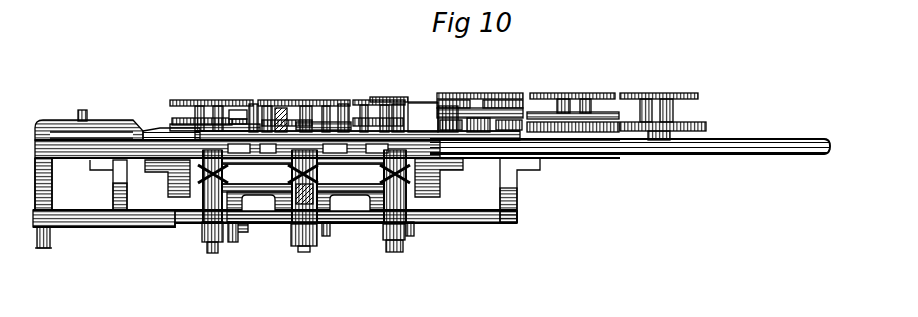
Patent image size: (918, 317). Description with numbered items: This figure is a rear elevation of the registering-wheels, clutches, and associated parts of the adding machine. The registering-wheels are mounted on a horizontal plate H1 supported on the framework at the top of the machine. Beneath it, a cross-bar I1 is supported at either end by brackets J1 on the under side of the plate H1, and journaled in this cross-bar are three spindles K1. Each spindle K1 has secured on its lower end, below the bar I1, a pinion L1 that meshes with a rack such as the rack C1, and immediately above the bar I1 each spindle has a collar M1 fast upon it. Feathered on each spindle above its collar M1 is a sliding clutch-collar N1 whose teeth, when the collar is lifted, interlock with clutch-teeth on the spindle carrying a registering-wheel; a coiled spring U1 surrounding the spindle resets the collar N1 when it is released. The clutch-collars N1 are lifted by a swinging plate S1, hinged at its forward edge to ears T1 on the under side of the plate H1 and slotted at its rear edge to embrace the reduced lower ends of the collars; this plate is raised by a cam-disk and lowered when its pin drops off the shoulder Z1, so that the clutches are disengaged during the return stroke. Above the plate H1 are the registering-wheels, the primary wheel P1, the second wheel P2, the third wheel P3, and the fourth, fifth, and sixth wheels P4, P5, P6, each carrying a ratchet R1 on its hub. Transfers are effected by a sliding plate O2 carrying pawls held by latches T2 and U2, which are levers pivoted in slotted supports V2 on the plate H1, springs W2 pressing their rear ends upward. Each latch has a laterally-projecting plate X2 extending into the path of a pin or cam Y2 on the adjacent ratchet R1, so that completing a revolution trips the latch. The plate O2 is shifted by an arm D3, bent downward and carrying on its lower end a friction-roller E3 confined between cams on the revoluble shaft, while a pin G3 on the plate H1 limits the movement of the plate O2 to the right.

The arm D3 is at (50, 122).
The pin G3 is at (97, 97).
The sliding plate O2 is at (104, 135).
The coiled spring U1 is at (200, 160).
The pin or cam Y2 is at (210, 110).
The laterally-projecting plate X2 is at (238, 115).
The primary registering-wheel P1 is at (251, 103).
The slotted supports V2 is at (262, 108).
The latch T2 is at (276, 108).
The second registering-wheel P2 is at (329, 102).
The latch U2 is at (343, 102).
The third registering-wheel P3 is at (416, 100).
The ratchet R1 is at (423, 113).
The fourth registering-wheel P4 is at (507, 95).
The fifth registering-wheel P5 is at (598, 94).
The sixth registering-wheel P6 is at (662, 96).
The horizontal plate H1 is at (630, 147).
The springs W2 is at (287, 149).
The gear-toothed rack C1 is at (324, 149).
The sliding clutch-collar N1 is at (163, 243).
The brackets J1 is at (113, 192).
The ears T1 is at (168, 178).
The friction-roller E3 is at (52, 241).
The cross-bar I1 is at (490, 217).
The collar M1 is at (207, 212).
The spindle K1 is at (208, 244).
The pinion L1 is at (235, 232).
The shoulder Z1 is at (237, 231).
The swinging plate S1 is at (325, 204).